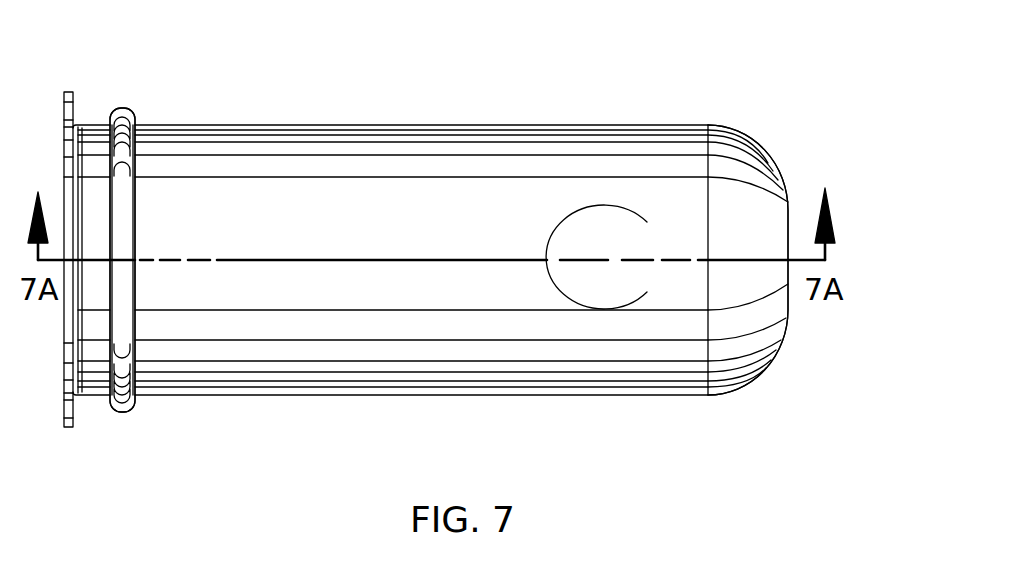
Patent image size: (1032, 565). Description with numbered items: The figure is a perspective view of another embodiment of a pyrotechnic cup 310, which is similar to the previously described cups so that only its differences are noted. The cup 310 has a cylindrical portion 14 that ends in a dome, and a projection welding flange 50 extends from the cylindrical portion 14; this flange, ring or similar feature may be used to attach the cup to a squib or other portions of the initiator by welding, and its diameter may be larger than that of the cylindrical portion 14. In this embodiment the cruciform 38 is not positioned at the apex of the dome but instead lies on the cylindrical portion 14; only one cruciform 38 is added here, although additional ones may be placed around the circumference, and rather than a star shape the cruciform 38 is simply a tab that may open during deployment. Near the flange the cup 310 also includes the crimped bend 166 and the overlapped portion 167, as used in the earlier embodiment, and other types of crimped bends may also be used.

The cylindrical portion 14 is at (418, 143).
The cruciform 38 is at (604, 223).
The projection welding flange 50 is at (77, 99).
The crimped bend 166 is at (128, 110).
The overlapped portion 167 is at (136, 90).
The pyrotechnic cup 310 is at (750, 104).